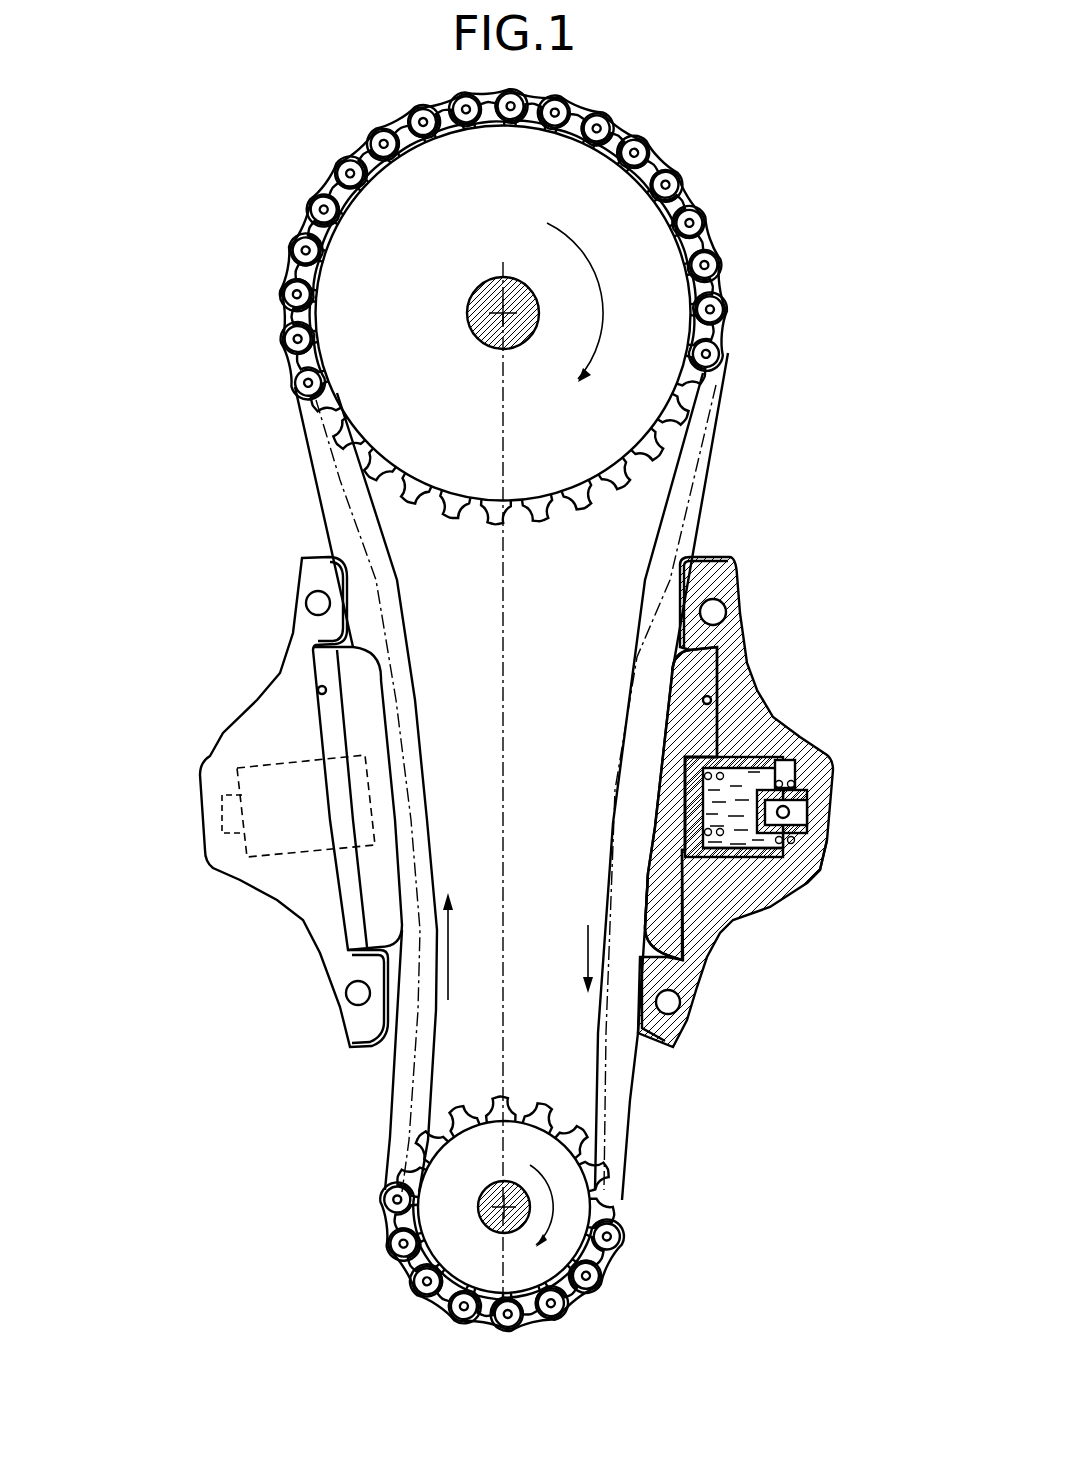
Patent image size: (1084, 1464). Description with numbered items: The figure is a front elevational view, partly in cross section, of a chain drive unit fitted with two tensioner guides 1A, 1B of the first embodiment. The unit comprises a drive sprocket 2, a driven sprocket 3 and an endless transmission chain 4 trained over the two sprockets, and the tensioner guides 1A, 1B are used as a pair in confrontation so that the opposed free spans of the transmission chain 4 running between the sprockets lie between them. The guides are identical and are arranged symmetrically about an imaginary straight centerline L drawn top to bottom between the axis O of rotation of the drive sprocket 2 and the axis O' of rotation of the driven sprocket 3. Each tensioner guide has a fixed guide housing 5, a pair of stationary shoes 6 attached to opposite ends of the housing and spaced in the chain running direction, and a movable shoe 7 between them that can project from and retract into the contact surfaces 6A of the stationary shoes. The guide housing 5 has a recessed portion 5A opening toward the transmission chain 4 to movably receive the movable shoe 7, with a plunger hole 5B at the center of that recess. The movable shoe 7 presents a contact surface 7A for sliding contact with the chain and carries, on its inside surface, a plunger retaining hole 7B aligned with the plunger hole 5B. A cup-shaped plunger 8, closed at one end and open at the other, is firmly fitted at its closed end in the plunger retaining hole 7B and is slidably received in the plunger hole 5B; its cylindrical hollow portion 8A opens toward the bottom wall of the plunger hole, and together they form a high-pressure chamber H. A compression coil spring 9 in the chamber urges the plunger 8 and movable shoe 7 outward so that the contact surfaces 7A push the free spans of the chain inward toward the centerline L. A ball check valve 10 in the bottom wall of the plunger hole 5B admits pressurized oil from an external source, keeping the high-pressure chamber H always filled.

The tensioner guide 1A is at (728, 782).
The tensioner guide 1B is at (237, 712).
The drive sprocket 2 is at (539, 1207).
The driven sprocket 3 is at (503, 298).
The transmission chain 4 is at (708, 227).
The guide housing 5 is at (277, 893).
The recessed portion 5A is at (320, 687).
The plunger hole 5B is at (795, 765).
The stationary shoe 6 is at (312, 553).
The contact surface 6A is at (350, 590).
The movable shoe 7 is at (365, 718).
The contact surface 7A is at (393, 805).
The plunger retaining hole 7B is at (647, 900).
The plunger 8 is at (685, 782).
The cylindrical hollow portion 8A is at (823, 866).
The compression coil spring 9 is at (737, 853).
The ball check valve 10 is at (807, 805).
The high-pressure chamber H is at (807, 885).
The centerline L is at (507, 640).
The axis of rotation O is at (495, 1225).
The axis of rotation O' is at (477, 326).